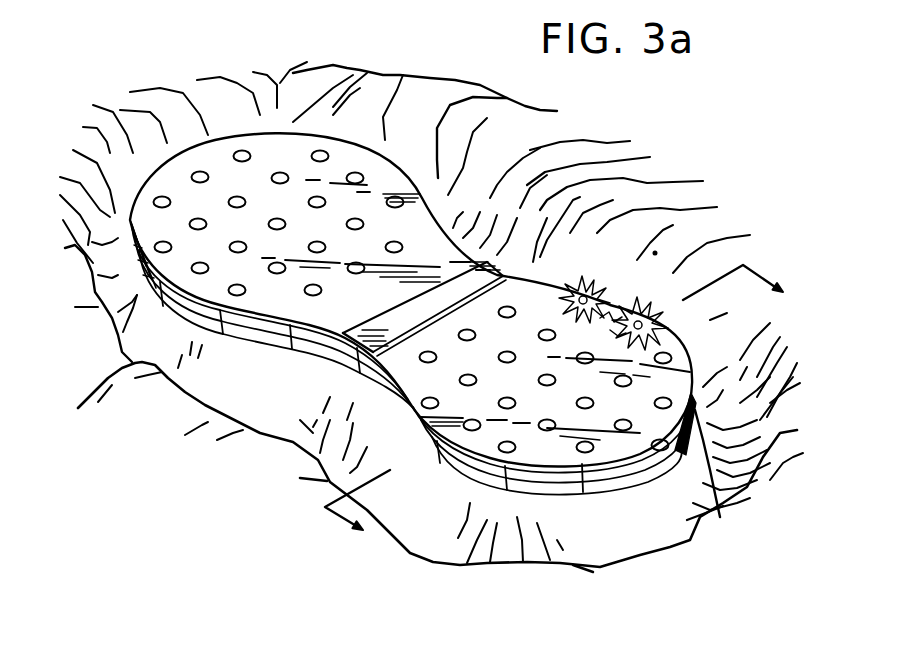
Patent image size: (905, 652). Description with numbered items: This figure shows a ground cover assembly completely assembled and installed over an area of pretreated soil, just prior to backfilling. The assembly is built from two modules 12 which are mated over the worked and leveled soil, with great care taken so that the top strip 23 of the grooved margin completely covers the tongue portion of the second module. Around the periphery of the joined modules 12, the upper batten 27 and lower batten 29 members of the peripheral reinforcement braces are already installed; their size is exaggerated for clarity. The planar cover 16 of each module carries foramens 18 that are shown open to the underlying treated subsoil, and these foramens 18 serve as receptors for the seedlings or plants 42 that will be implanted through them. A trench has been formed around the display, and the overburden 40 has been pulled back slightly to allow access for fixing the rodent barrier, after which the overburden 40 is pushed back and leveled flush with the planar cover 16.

The module 12 is at (343, 157).
The planar cover 16 is at (362, 256).
The foramen 18 is at (308, 204).
The top strip 23 is at (418, 326).
The upper batten 27 is at (371, 373).
The lower batten 29 is at (257, 336).
The overburden 40 is at (514, 149).
The plants 42 is at (626, 301).